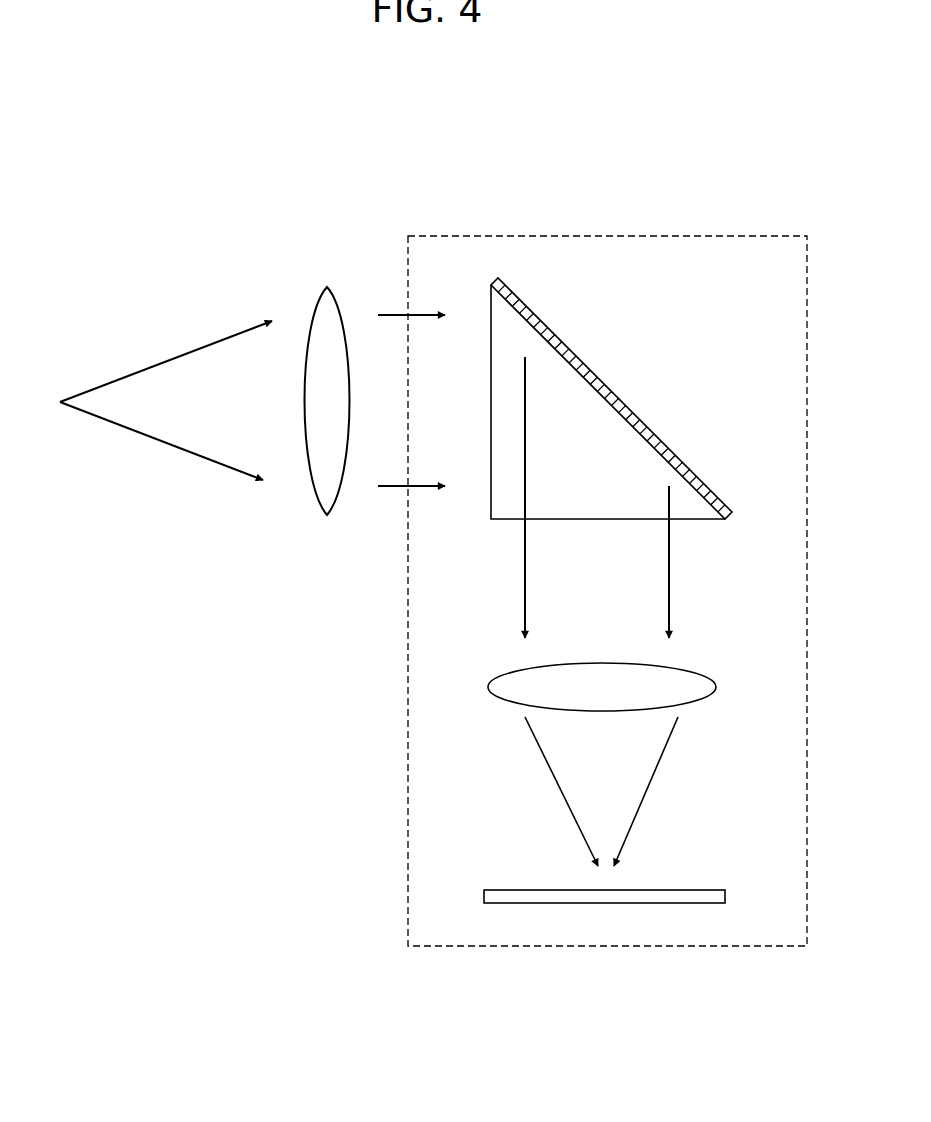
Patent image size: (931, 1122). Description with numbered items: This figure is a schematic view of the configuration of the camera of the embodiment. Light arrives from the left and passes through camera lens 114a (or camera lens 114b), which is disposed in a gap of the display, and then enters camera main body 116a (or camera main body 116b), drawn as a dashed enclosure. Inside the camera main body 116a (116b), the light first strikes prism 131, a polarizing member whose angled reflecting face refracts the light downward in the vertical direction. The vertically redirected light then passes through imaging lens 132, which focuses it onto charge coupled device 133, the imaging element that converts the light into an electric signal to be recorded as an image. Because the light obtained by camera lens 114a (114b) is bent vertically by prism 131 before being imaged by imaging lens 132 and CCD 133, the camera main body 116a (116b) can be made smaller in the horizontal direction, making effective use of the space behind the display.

The camera lens 114a is at (296, 351).
The camera lens 114b is at (324, 287).
The camera main body 116a is at (607, 541).
The camera main body 116b is at (573, 236).
The prism 131 is at (592, 510).
The imaging lens 132 is at (698, 673).
The charge coupled device (CCD) 133 is at (697, 890).